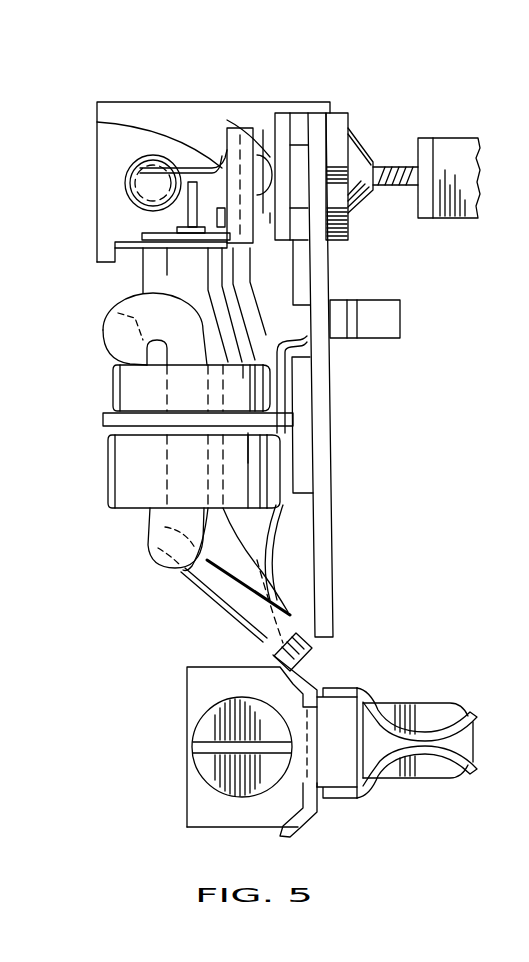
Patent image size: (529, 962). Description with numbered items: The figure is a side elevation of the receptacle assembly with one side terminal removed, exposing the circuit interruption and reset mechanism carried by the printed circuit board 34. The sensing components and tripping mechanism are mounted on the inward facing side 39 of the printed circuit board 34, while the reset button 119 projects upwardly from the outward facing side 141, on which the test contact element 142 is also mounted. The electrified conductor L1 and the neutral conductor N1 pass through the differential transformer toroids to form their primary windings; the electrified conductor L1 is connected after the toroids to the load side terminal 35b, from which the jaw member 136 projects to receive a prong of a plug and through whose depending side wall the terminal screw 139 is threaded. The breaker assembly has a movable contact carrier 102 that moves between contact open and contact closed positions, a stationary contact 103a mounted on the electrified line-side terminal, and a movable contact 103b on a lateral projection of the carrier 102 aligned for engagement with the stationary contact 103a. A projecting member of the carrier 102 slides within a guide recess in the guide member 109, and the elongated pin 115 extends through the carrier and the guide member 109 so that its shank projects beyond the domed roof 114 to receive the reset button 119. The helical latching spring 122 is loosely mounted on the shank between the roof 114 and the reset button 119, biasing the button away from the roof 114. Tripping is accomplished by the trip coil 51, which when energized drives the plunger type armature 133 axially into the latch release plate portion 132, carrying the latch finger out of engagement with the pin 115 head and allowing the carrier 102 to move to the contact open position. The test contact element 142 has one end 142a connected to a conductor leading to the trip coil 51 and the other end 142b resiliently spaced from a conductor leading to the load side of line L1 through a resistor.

The latch release plate portion 132 is at (97, 122).
The plunger type armature 133 is at (97, 222).
The movable contact carrier 102 is at (229, 123).
The stationary contact 103a is at (273, 113).
The movable contact 103b is at (289, 113).
The printed circuit board 34 is at (318, 487).
The outward facing side 141 is at (334, 540).
The guide member 109 is at (343, 238).
The roof 114 is at (361, 128).
The elongated pin 115 is at (395, 190).
The helical latching spring 122 is at (395, 190).
The reset button 119 is at (447, 142).
The test contact element 142 is at (400, 325).
The end of test contact element 142a is at (332, 293).
The end of test contact element 142b is at (348, 334).
The trip coil 51 is at (167, 275).
The neutral conductor N1 is at (105, 340).
The electrified conductor L1 is at (237, 560).
The inward facing side 39 is at (314, 568).
The load side terminal 35b is at (227, 813).
The terminal screw 139 is at (237, 722).
The jaw member 136 is at (372, 793).